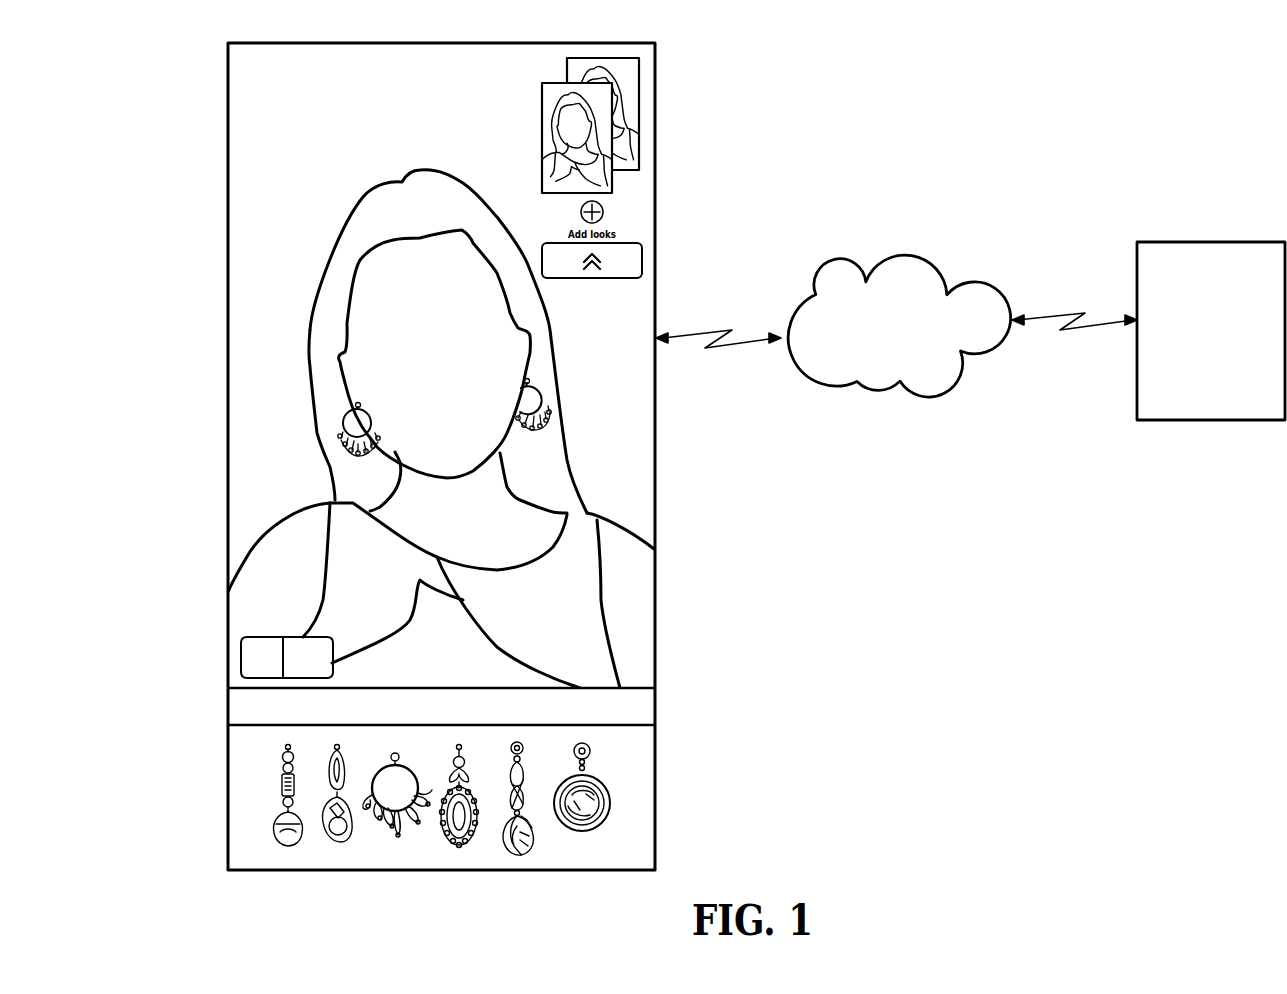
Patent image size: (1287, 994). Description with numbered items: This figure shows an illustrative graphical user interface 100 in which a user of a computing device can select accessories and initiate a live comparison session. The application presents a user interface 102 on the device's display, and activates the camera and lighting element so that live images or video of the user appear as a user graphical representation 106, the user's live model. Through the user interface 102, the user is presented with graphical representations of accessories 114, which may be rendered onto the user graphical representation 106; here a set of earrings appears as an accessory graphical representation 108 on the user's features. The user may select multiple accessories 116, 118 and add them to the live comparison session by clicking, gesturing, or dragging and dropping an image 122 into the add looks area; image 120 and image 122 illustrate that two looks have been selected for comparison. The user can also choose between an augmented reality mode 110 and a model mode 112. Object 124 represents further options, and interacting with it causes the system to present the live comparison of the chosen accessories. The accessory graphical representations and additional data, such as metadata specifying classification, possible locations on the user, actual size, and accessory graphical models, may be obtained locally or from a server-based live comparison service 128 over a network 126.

The graphical user interface 100 is at (97, 108).
The user interface 102 is at (227, 200).
The user graphical representation 106 is at (367, 197).
The accessory graphical representation 108 is at (342, 428).
The augmented reality mode 110 is at (247, 638).
The model mode 112 is at (323, 636).
The graphical representations of accessories 114 is at (400, 688).
The accessory 116 is at (338, 843).
The accessory 118 is at (522, 853).
The image 120 is at (602, 57).
The image 122 is at (541, 103).
The object 124 is at (645, 256).
The network 126 is at (938, 260).
The live comparison service 128 is at (1232, 242).